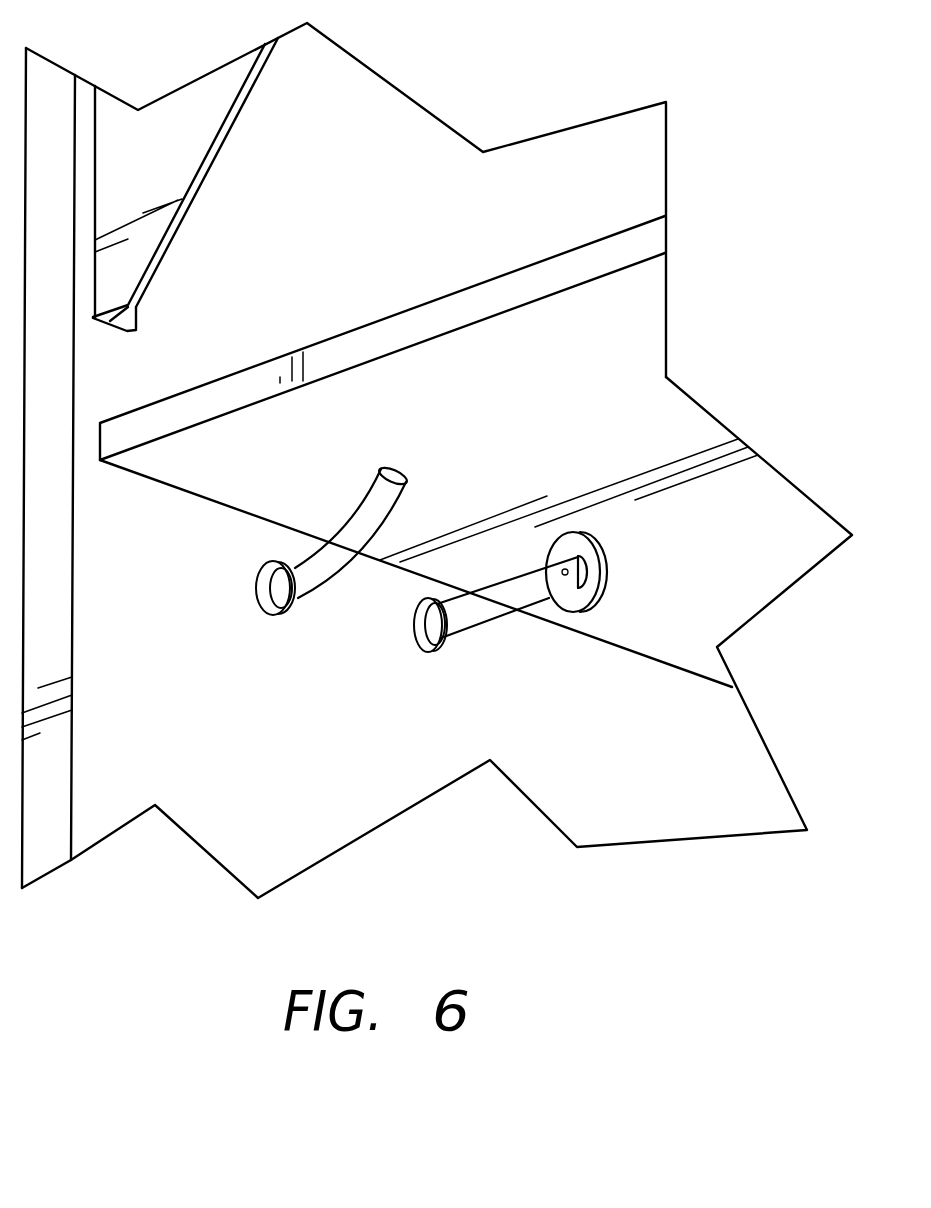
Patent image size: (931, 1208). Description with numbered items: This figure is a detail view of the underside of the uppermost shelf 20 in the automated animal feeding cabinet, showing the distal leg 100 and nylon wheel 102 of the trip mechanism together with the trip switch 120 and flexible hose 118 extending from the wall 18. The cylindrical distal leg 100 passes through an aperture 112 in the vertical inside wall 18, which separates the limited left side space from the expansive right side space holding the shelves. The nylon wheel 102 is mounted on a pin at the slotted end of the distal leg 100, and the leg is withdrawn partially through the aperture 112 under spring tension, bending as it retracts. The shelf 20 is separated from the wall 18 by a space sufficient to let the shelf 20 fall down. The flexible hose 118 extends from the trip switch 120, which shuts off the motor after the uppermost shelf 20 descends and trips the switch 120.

The vertical inside wall 18 is at (328, 823).
The shelf 20 is at (585, 338).
The distal leg 100 is at (497, 618).
The nylon wheel 102 is at (590, 580).
The aperture 112 is at (416, 633).
The flexible hose 118 is at (368, 503).
The trip switch 120 is at (267, 612).